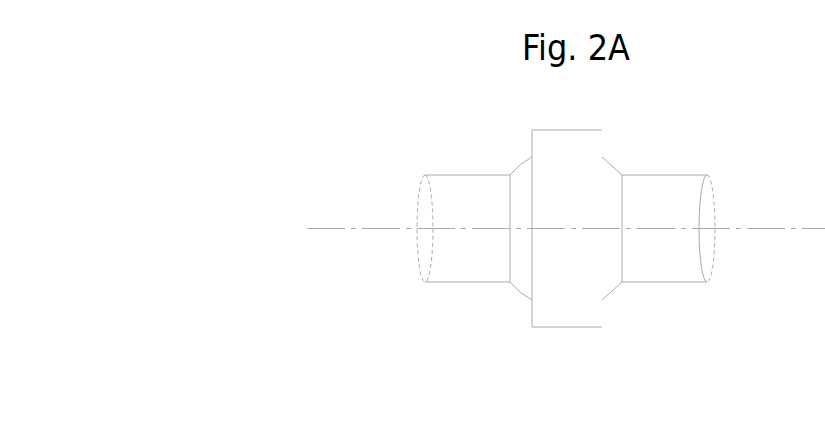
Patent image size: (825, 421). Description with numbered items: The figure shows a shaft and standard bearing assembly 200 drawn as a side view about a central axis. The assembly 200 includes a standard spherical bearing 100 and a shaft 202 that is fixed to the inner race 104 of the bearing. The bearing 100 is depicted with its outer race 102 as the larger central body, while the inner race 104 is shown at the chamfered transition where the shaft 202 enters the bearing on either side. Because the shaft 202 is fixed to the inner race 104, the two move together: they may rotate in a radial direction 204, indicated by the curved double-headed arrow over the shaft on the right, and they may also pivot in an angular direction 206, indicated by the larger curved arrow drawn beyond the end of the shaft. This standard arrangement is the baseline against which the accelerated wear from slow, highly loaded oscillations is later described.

The standard spherical bearing 100 is at (618, 300).
The outer race 102 is at (601, 139).
The inner race 104 is at (515, 292).
The shaft and standard bearing assembly 200 is at (583, 118).
The shaft 202 is at (447, 175).
The radial direction 204 is at (667, 172).
The angular direction 206 is at (779, 287).